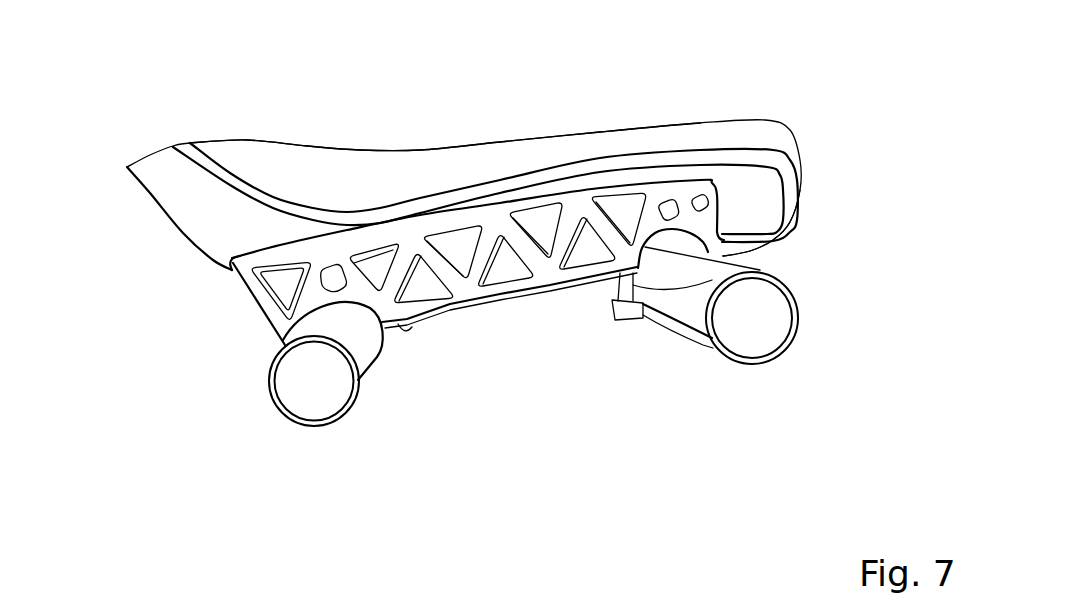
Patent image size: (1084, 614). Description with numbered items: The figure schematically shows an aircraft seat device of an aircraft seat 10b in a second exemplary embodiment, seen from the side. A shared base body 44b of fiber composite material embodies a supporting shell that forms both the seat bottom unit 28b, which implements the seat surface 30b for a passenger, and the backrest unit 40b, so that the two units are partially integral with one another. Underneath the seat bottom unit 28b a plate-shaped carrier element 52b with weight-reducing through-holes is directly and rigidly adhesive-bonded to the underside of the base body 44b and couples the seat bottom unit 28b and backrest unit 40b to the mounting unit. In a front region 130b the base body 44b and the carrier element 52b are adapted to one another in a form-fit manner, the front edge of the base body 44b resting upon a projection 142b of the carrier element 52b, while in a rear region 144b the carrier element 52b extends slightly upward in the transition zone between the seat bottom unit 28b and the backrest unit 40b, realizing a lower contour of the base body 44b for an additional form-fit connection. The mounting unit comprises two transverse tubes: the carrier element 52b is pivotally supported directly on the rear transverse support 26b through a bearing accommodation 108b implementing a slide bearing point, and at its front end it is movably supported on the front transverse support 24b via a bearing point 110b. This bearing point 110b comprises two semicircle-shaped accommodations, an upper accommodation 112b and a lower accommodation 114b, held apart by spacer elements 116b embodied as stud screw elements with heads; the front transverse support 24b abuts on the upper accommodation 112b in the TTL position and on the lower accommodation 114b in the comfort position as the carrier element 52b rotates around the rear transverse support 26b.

The aircraft seat 10b is at (793, 118).
The front transverse support 24b is at (770, 318).
The rear transverse support 26b is at (303, 380).
The seat bottom unit 28b is at (490, 167).
The seat surface 30b is at (582, 161).
The backrest unit 40b is at (268, 170).
The base body 44b is at (228, 183).
The carrier element 52b is at (487, 300).
The bearing accommodation 108b is at (352, 307).
The bearing point 110b is at (651, 333).
The upper accommodation 112b is at (700, 228).
The lower accommodation 114b is at (692, 322).
The spacer element 116b is at (760, 270).
The front region 130b is at (735, 197).
The projection 142b is at (740, 252).
The rear region 144b is at (231, 268).